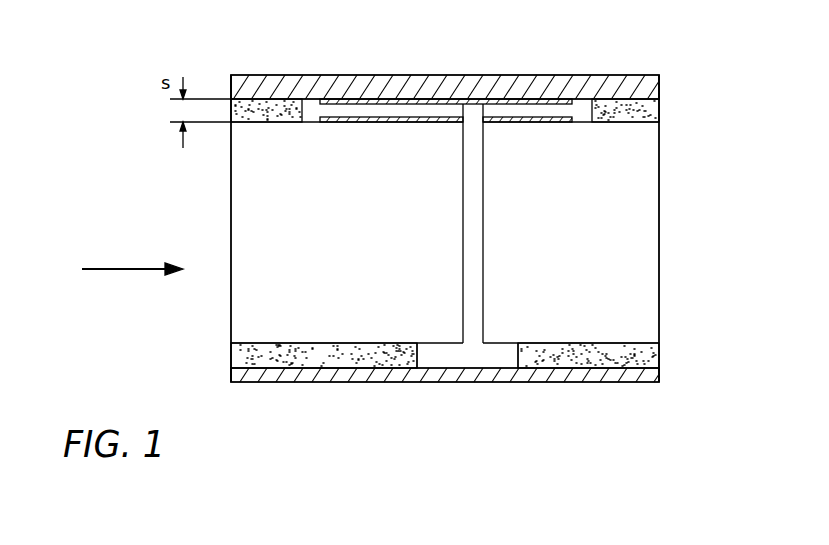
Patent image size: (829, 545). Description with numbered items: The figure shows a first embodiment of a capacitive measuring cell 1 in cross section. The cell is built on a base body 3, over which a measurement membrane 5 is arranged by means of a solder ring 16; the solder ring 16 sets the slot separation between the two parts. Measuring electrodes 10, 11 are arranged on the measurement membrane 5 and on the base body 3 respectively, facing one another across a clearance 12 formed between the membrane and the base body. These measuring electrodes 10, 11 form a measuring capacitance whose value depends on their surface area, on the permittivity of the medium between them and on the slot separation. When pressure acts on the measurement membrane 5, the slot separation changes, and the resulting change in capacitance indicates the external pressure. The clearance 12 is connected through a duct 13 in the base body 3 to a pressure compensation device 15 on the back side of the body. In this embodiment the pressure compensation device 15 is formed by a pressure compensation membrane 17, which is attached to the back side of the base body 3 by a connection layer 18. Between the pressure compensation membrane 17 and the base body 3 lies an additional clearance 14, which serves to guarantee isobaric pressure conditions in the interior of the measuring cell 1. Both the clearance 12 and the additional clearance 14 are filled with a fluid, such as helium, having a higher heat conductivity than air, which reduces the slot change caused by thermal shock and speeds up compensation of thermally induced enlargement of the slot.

The measuring cell 1 is at (132, 255).
The base body 3 is at (331, 284).
The measurement membrane 5 is at (602, 72).
The measuring electrode 10 is at (357, 100).
The measuring electrode 11 is at (418, 120).
The clearance 12 is at (482, 105).
The duct 13 is at (474, 252).
The additional clearance 14 is at (480, 350).
The pressure compensation device 15 is at (683, 342).
The solder ring 16 is at (635, 105).
The pressure compensation membrane 17 is at (405, 382).
The connection layer 18 is at (262, 351).